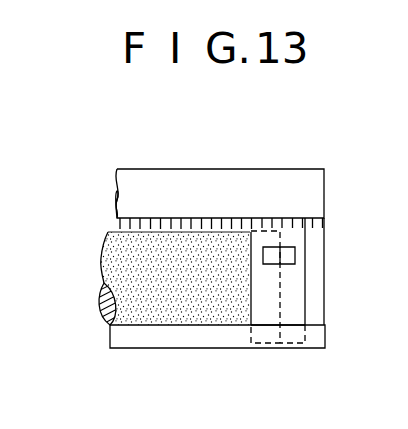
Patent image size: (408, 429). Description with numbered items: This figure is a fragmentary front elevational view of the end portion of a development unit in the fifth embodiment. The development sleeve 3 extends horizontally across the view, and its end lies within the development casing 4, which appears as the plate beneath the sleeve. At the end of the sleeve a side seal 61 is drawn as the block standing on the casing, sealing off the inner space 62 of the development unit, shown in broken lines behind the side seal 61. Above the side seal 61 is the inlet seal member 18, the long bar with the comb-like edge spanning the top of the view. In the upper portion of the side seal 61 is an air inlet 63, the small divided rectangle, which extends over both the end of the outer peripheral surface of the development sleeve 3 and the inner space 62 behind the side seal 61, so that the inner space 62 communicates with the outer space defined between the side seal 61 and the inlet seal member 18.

The inlet seal member 18 is at (280, 175).
The development sleeve 3 is at (105, 262).
The development casing 4 is at (150, 342).
The side seal 61 is at (293, 288).
The inner space 62 is at (298, 273).
The air inlet 63 is at (290, 253).